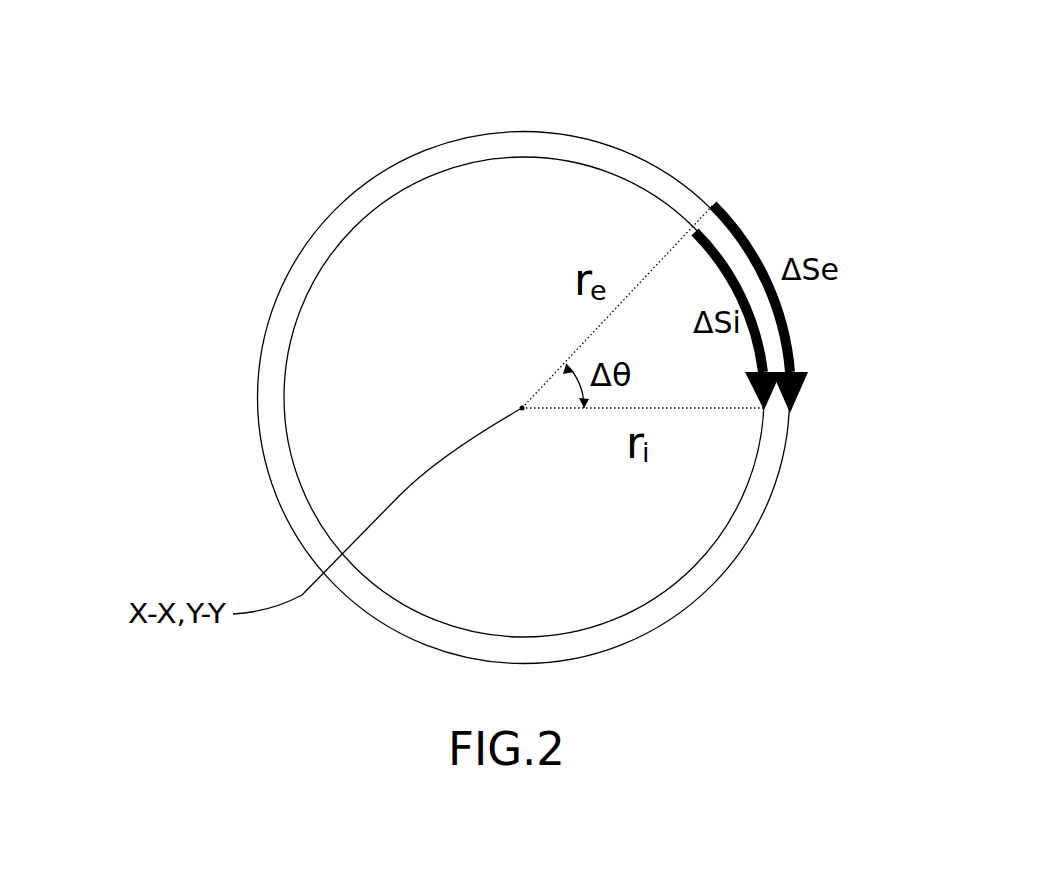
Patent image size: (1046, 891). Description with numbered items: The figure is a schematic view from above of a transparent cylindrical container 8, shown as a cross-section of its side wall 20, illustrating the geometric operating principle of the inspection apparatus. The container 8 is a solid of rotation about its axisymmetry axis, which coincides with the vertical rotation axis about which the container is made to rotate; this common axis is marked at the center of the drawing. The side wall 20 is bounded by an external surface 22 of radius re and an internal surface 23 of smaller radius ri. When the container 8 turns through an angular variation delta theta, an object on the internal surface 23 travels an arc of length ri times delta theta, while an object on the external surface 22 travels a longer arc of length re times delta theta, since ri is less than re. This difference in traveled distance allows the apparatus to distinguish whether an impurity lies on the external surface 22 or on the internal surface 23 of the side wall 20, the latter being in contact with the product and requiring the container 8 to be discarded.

The cylindrical container 8 is at (684, 158).
The side wall 20 is at (288, 310).
The external surface 22 is at (350, 190).
The internal surface 23 is at (345, 243).